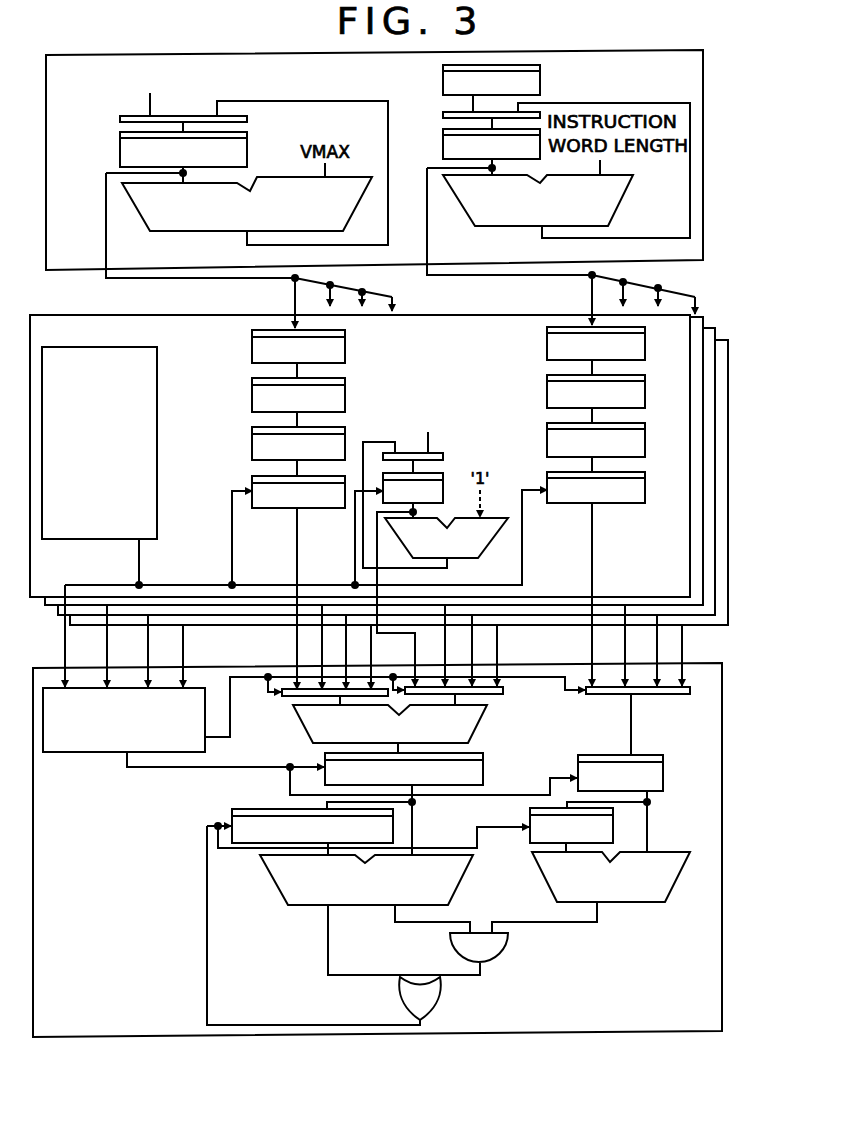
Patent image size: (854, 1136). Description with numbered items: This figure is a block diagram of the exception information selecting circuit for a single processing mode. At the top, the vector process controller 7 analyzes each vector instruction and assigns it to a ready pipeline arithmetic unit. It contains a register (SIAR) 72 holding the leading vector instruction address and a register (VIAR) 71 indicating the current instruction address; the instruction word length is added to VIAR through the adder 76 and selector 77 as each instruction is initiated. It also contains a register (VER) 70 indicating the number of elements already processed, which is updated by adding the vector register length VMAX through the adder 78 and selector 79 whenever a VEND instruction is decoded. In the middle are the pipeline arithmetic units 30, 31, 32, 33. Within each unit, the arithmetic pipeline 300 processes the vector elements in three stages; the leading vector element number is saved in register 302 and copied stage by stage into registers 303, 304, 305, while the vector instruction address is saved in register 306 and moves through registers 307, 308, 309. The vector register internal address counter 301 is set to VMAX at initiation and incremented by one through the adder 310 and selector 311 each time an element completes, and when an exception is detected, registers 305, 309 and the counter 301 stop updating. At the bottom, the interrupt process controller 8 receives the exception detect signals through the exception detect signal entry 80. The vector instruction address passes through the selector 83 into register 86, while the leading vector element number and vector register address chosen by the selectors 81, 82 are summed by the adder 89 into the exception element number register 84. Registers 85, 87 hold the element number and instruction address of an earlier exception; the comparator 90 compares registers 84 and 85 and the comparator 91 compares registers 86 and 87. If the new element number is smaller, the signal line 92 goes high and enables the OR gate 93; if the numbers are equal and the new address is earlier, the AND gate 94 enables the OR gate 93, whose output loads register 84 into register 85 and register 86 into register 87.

The vector process controller 7 is at (703, 240).
The interrupt process controller 8 is at (722, 995).
The pipeline arithmetic unit 30 is at (690, 525).
The pipeline arithmetic unit 31 is at (703, 558).
The pipeline arithmetic unit 32 is at (715, 592).
The pipeline arithmetic unit 33 is at (728, 627).
The register (VER) 70 is at (120, 146).
The register (VIAR) 71 is at (443, 146).
The register (SIAR) 72 is at (541, 80).
The adder 76 is at (460, 210).
The selector 77 is at (443, 114).
The adder 78 is at (138, 218).
The selector 79 is at (121, 116).
The exception detect signal entry 80 is at (110, 753).
The selector 81 is at (290, 700).
The selector 82 is at (503, 692).
The selector 83 is at (660, 694).
The exception element number register 84 is at (494, 760).
The register 85 is at (246, 808).
The register 86 is at (664, 782).
The register 87 is at (530, 843).
The adder 89 is at (478, 715).
The comparator 90 is at (460, 885).
The comparator 91 is at (672, 885).
The signal line 92 is at (326, 942).
The OR gate 93 is at (448, 998).
The AND gate 94 is at (510, 937).
The arithmetic pipeline 300 is at (157, 518).
The vector register internal address counter 301 is at (444, 487).
The register 302 is at (252, 349).
The register 303 is at (252, 397).
The register 304 is at (252, 444).
The register 305 is at (252, 490).
The register 306 is at (547, 347).
The register 307 is at (547, 395).
The register 308 is at (547, 442).
The register 309 is at (633, 505).
The adder 310 is at (492, 538).
The selector 311 is at (398, 452).